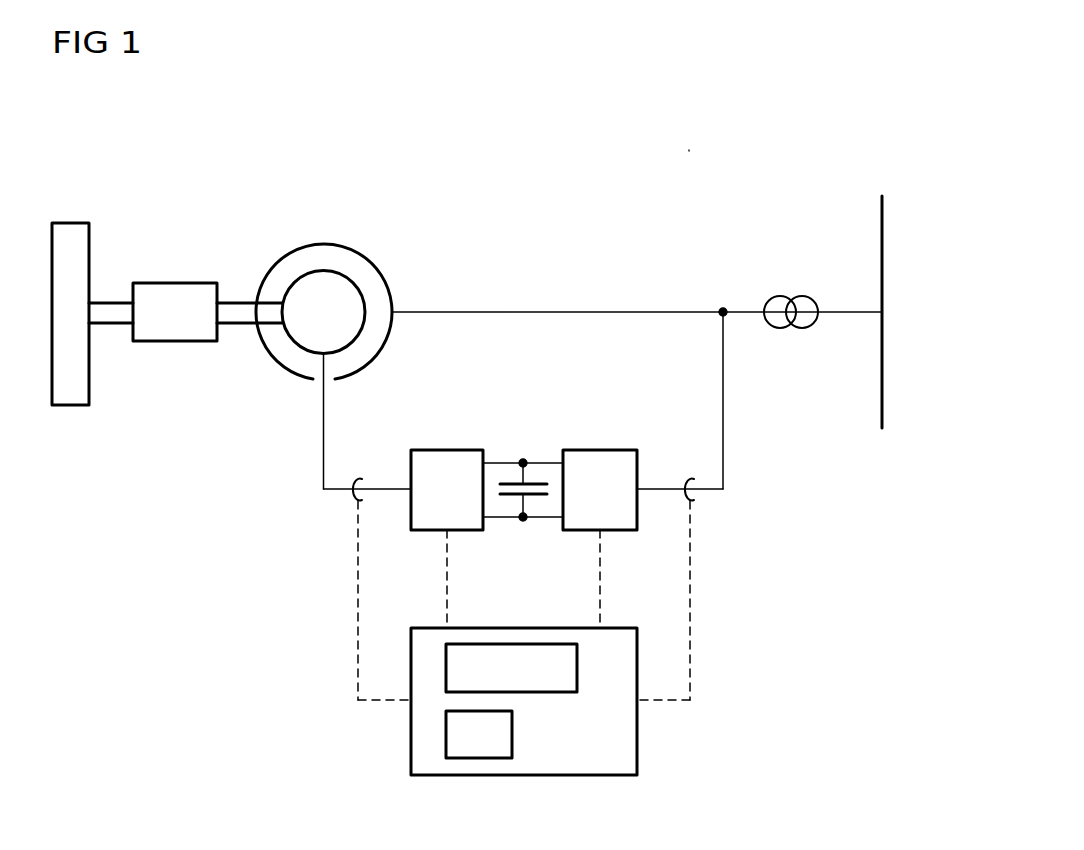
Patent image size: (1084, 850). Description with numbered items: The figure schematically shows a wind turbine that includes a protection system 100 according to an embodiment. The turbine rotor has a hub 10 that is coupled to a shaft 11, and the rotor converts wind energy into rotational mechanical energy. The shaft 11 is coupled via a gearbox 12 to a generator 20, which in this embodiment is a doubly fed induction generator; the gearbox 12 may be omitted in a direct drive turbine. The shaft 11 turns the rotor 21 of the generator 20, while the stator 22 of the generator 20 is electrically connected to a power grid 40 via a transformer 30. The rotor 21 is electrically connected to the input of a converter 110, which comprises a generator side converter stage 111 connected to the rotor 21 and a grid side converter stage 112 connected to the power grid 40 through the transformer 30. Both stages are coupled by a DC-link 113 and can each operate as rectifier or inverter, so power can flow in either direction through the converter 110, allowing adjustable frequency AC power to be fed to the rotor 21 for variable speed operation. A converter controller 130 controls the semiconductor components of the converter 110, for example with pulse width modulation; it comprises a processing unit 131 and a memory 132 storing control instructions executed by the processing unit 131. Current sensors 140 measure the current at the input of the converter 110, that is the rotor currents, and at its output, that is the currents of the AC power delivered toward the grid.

The protection system 100 is at (700, 135).
The hub 10 is at (70, 222).
The shaft 11 is at (111, 300).
The gearbox 12 is at (175, 283).
The generator 20 is at (400, 195).
The rotor 21 is at (362, 282).
The stator 22 is at (325, 244).
The transformer 30 is at (803, 296).
The power grid 40 is at (884, 289).
The converter 110 is at (568, 392).
The generator side converter stage 111 is at (447, 450).
The grid side converter stage 112 is at (600, 450).
The DC-link 113 is at (522, 460).
The converter controller 130 is at (473, 628).
The processing unit 131 is at (513, 735).
The memory 132 is at (543, 644).
The current sensors 140 is at (358, 477).